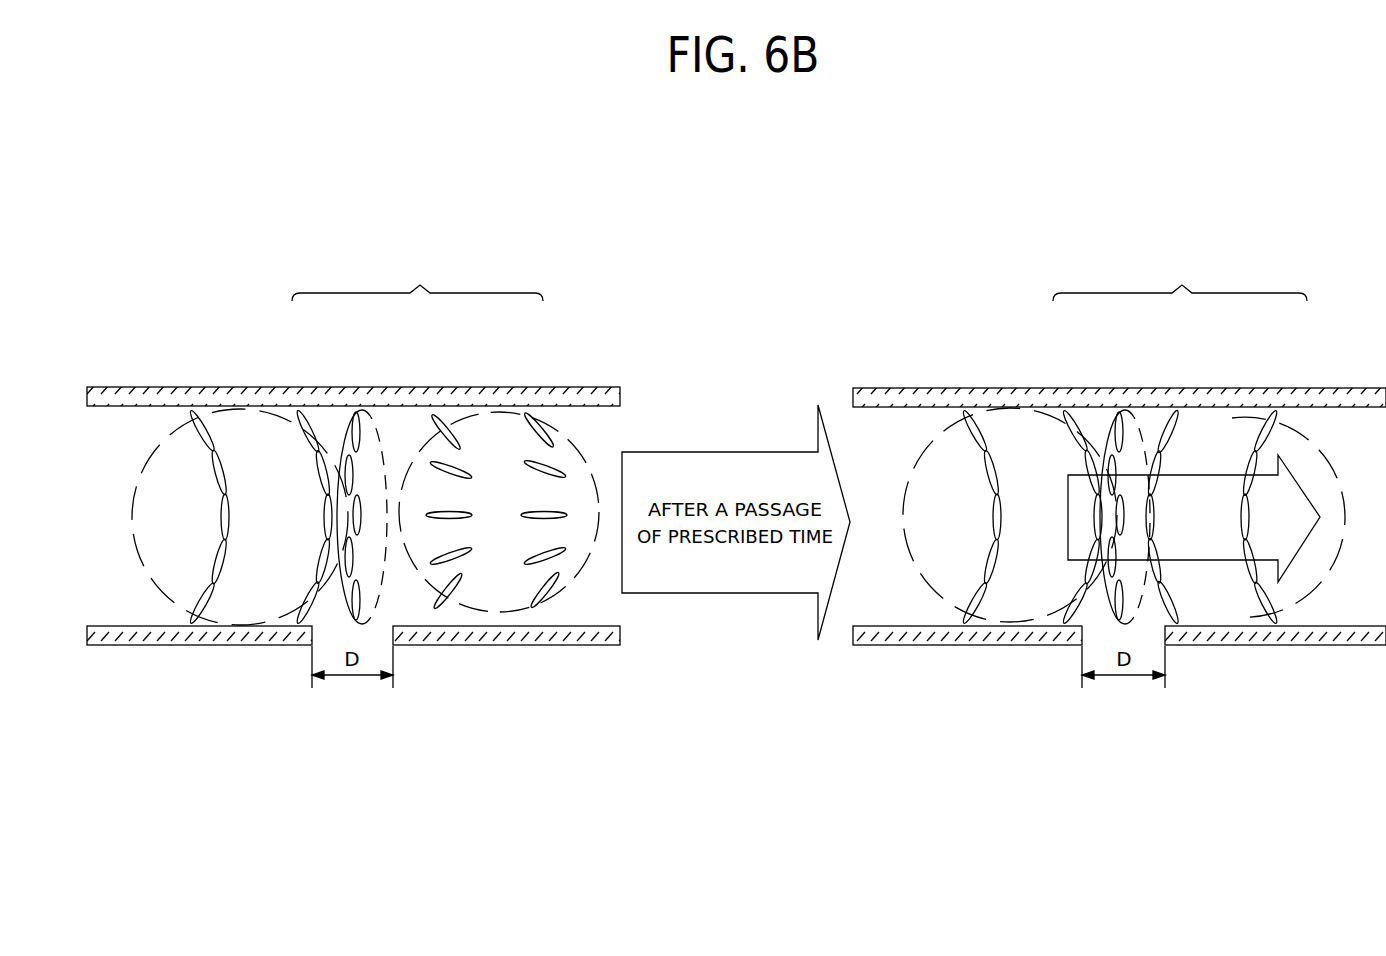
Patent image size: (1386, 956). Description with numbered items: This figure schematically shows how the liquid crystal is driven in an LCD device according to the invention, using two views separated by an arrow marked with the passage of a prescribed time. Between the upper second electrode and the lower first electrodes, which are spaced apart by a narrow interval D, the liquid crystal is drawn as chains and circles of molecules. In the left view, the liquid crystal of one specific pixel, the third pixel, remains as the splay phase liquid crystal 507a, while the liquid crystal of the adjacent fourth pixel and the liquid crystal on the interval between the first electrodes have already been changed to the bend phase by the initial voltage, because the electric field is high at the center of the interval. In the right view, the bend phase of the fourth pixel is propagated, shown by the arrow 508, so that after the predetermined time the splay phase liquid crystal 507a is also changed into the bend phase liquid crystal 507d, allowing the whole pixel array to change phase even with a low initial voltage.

The splay phase liquid crystal 507a is at (556, 433).
The bend phase liquid crystal 507d is at (1318, 434).
The phase propagation 508 is at (1215, 561).